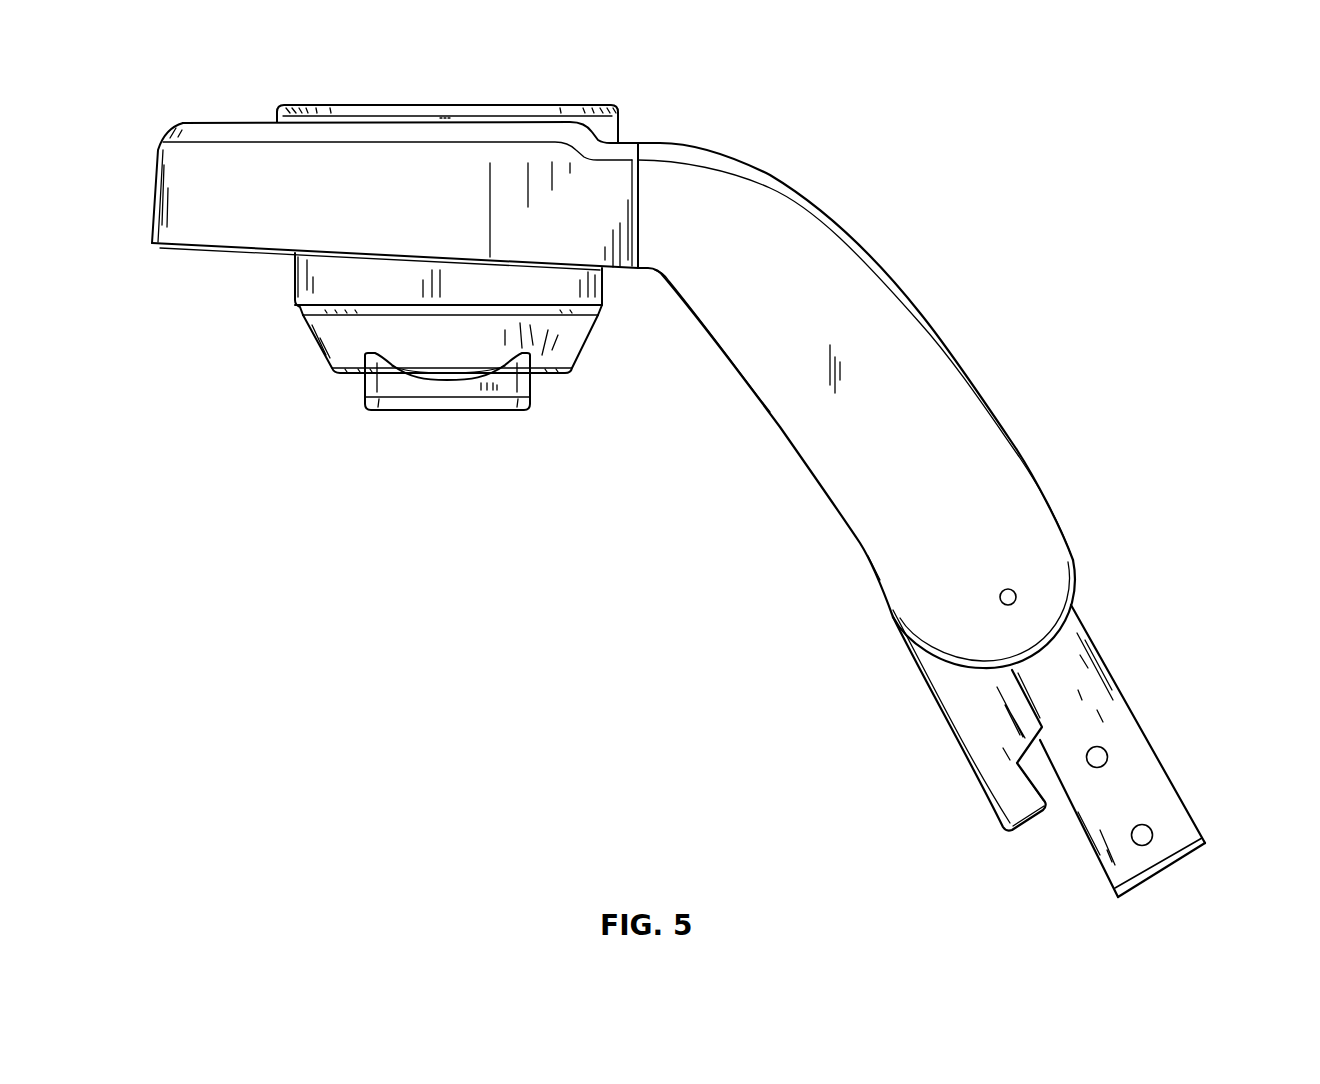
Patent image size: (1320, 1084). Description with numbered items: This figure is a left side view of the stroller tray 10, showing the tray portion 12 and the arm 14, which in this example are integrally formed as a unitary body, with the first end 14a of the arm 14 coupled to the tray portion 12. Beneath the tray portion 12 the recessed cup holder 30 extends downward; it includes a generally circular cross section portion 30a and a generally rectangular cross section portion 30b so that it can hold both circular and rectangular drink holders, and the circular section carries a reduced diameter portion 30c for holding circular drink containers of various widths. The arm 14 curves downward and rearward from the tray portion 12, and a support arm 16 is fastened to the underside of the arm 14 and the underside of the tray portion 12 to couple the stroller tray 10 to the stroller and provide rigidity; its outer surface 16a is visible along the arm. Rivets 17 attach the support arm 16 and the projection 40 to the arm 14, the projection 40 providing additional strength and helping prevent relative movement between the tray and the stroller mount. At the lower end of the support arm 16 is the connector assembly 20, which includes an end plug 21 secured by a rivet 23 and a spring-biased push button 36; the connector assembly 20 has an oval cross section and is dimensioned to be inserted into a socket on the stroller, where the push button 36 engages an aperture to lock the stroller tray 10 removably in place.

The stroller tray 10 is at (206, 92).
The tray portion 12 is at (210, 227).
The arm 14 is at (887, 388).
The first end 14a is at (728, 205).
The support arm 16 is at (1163, 764).
The bar surface 16a is at (1163, 825).
The rivets 17 is at (1016, 597).
The connector assembly 20 is at (1112, 890).
The end plug 21 is at (1183, 860).
The rivet 23 is at (1131, 837).
The recessed cup holder 30 is at (466, 353).
The generally circular cross section portion 30a is at (585, 280).
The generally rectangular cross section portion 30b is at (488, 403).
The reduced diameter portion 30c is at (562, 342).
The spring-biased push button 36 is at (1108, 753).
The projection 40 is at (983, 750).